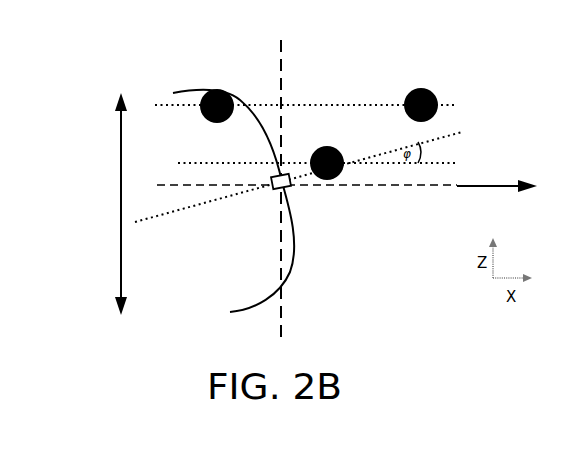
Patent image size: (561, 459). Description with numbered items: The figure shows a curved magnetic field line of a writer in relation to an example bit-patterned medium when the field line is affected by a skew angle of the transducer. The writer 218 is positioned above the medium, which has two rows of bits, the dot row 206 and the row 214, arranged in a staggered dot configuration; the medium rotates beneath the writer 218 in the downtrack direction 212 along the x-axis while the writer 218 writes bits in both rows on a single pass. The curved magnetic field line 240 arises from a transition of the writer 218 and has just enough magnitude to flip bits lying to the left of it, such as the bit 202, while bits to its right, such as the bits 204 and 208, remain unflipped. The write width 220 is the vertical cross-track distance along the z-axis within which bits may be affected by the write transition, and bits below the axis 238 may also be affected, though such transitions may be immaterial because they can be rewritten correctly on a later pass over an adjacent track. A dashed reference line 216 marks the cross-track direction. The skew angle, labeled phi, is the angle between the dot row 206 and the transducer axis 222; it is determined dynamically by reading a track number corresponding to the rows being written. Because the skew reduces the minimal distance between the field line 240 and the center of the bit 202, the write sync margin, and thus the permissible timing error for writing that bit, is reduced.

The bit 202 is at (203, 112).
The bit 204 is at (328, 146).
The dot row 206 is at (452, 162).
The bit 208 is at (436, 93).
The downtrack direction 212 is at (497, 178).
The row of bits 214 is at (350, 104).
The cross-track reference line 216 is at (281, 92).
The writer 218 is at (287, 188).
The write width 220 is at (120, 137).
The transducer axis 222 is at (168, 212).
The axis 238 is at (215, 185).
The magnetic field line 240 is at (247, 104).